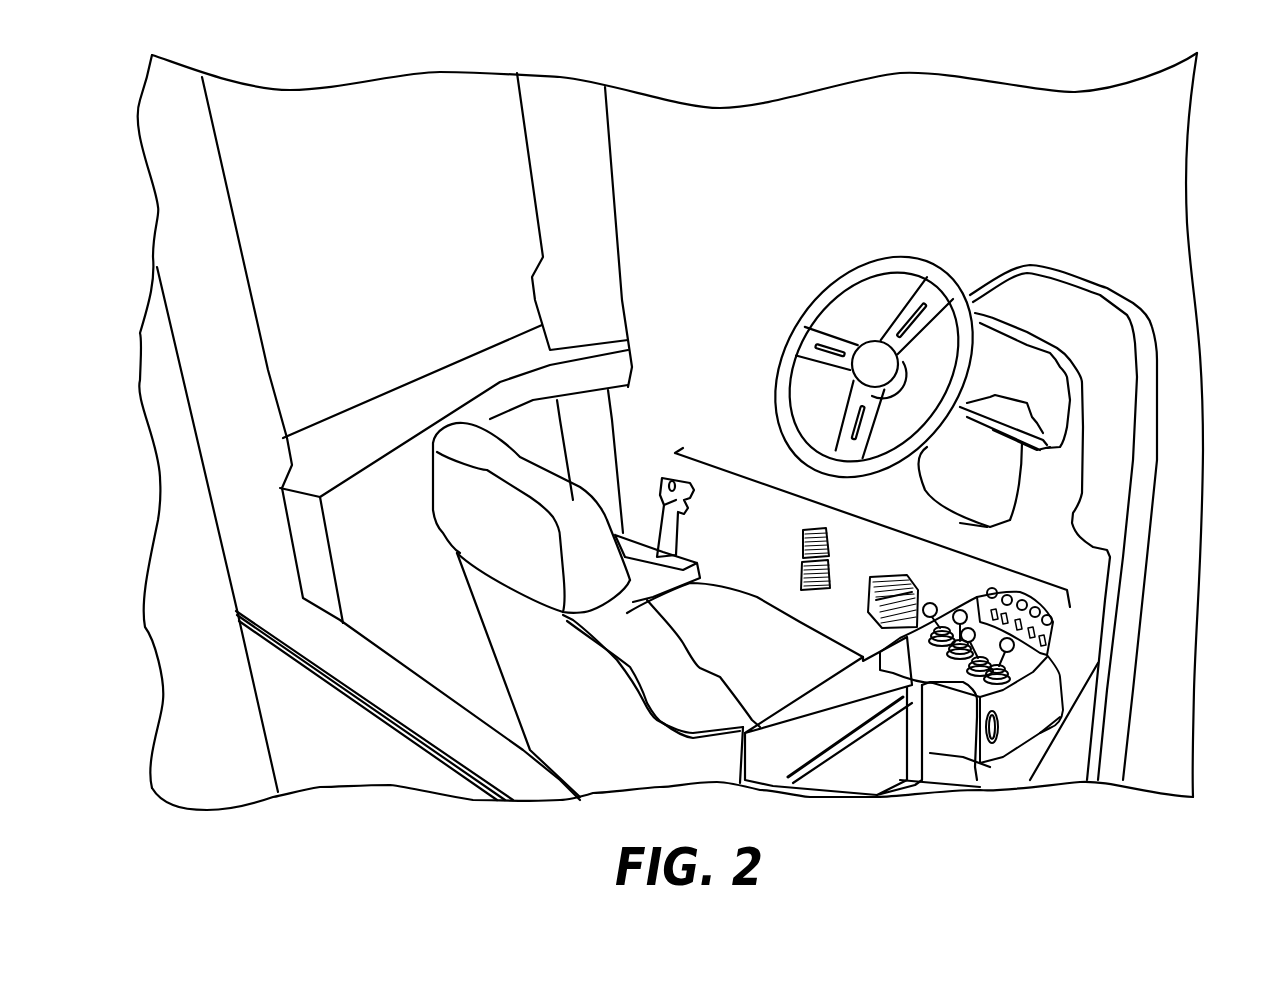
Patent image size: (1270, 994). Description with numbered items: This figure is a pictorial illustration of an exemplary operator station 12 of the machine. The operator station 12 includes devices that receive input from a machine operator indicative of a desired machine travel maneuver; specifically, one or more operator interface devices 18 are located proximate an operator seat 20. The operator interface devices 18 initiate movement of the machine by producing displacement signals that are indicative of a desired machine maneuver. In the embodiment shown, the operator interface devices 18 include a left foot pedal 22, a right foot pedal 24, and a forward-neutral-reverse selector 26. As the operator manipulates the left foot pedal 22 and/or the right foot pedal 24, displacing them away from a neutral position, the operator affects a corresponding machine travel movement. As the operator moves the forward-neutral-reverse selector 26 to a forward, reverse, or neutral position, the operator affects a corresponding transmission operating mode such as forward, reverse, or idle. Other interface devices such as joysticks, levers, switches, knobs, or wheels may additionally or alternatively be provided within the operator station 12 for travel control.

The operator station 12 is at (1138, 170).
The operator interface devices 18 is at (885, 523).
The operator seat 20 is at (573, 500).
The left foot pedal 22 is at (800, 550).
The right foot pedal 24 is at (877, 593).
The forward-neutral-reverse (FNR) selector 26 is at (931, 606).